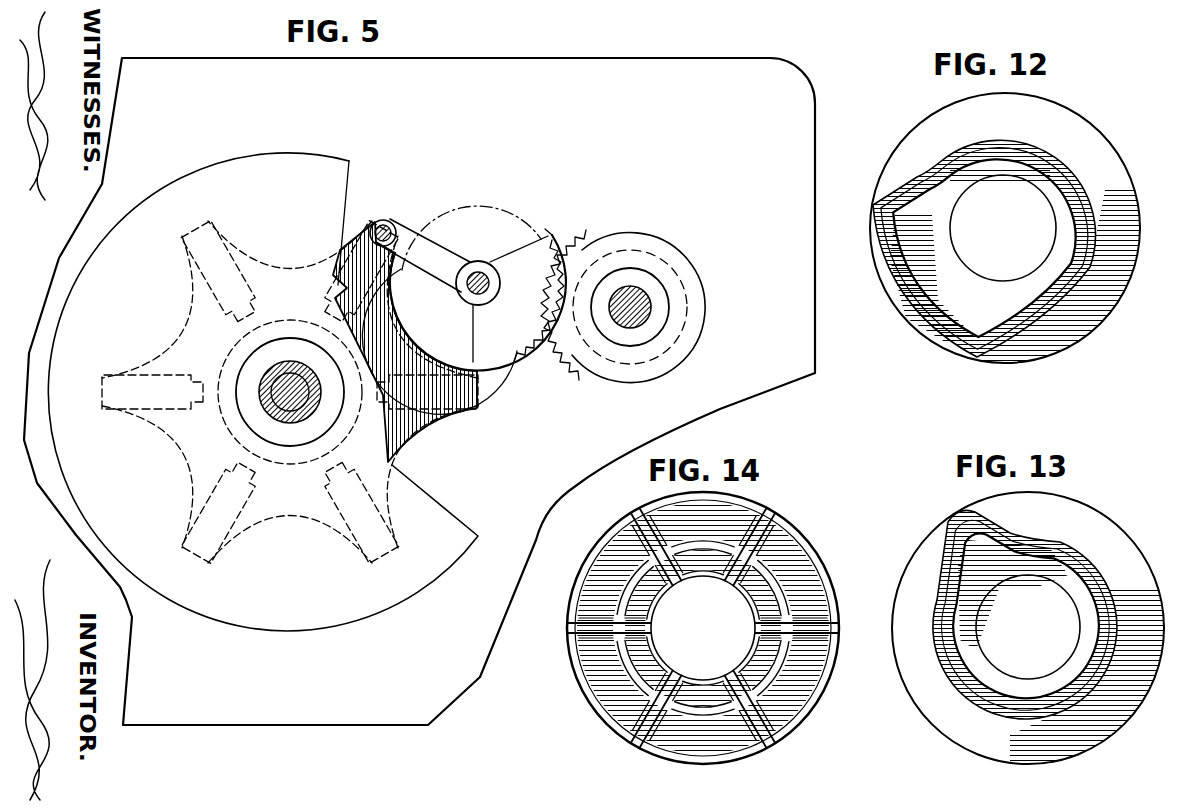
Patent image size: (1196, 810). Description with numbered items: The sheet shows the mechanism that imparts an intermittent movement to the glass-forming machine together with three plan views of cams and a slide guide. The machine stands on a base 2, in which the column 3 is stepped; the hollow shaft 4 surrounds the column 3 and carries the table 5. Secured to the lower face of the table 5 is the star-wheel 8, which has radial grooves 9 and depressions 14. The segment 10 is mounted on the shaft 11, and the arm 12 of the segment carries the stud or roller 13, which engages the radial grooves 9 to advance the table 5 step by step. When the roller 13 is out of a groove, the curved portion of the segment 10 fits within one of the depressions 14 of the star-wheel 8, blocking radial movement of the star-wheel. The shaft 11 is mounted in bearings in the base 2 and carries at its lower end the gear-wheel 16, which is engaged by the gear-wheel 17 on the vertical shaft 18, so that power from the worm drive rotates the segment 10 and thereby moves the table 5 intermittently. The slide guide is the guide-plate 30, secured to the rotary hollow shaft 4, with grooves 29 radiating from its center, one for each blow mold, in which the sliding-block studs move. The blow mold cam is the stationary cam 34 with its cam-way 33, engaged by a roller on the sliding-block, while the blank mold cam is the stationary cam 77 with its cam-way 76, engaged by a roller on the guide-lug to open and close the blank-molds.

In FIG. 5, the base 2 is at (490, 636).
In FIG. 5, the column 3 is at (289, 378).
In FIG. 5, the hollow shaft 4 is at (266, 394).
In FIG. 5, the table 5 is at (430, 507).
In FIG. 5, the star-wheel 8 is at (405, 410).
In FIG. 5, the radial grooves 9 is at (352, 260).
In FIG. 5, the segment 10 is at (478, 288).
In FIG. 5, the shaft 11 is at (479, 272).
In FIG. 5, the arm 12 is at (423, 255).
In FIG. 5, the roller 13 is at (384, 220).
In FIG. 5, the depressions 14 is at (418, 356).
In FIG. 5, the gear-wheel 16 is at (533, 352).
In FIG. 5, the gear-wheel 17 is at (587, 364).
In FIG. 5, the vertical shaft 18 is at (630, 312).
In FIG. 14, the grooves 29 is at (807, 628).
In FIG. 14, the guide-plate 30 is at (812, 576).
In FIG. 13, the cam-way 33 is at (940, 637).
In FIG. 13, the stationary cam 34 is at (930, 547).
In FIG. 12, the cam-way 76 is at (937, 338).
In FIG. 12, the stationary cam 77 is at (1128, 230).